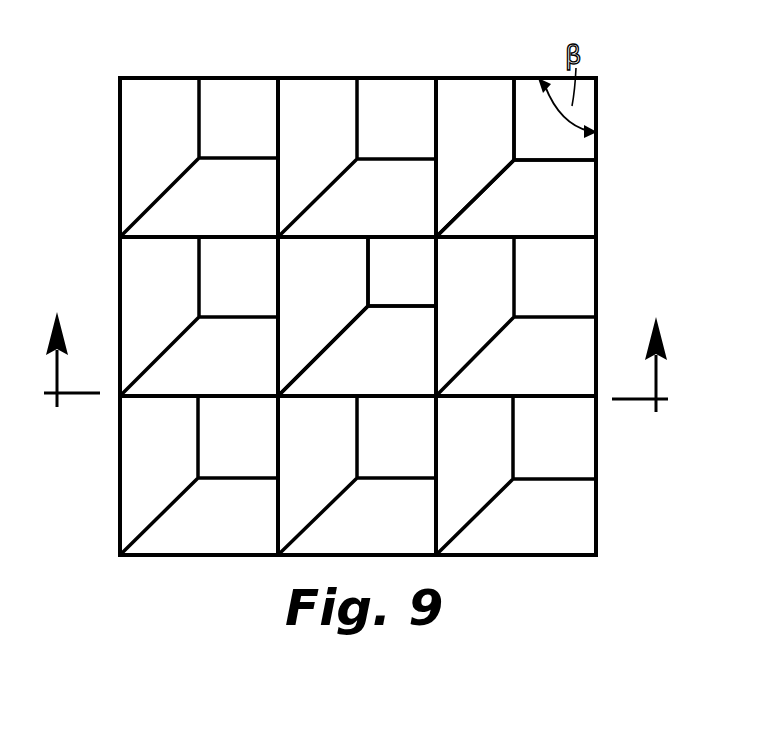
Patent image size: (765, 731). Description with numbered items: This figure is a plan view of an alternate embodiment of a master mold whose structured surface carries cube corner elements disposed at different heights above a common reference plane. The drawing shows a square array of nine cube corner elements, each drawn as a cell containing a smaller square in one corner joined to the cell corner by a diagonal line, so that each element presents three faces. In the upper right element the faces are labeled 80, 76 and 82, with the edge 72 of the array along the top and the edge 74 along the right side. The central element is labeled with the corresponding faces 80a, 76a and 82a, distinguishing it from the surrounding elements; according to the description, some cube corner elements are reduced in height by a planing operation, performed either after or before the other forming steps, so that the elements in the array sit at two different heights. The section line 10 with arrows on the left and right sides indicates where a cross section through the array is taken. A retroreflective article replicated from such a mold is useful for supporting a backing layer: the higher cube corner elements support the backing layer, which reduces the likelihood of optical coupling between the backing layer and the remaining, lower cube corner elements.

The top edge of panel 72 is at (523, 79).
The side edge of panel 74 is at (600, 144).
The raised square facet 76 is at (558, 156).
The first inclined facet 80 is at (490, 150).
The second inclined facet 82 is at (555, 220).
The raised square facet (variant) 76a is at (426, 292).
The first inclined facet (variant) 80a is at (348, 302).
The second inclined facet (variant) 82a is at (404, 367).
The section line 10- 10 is at (358, 337).